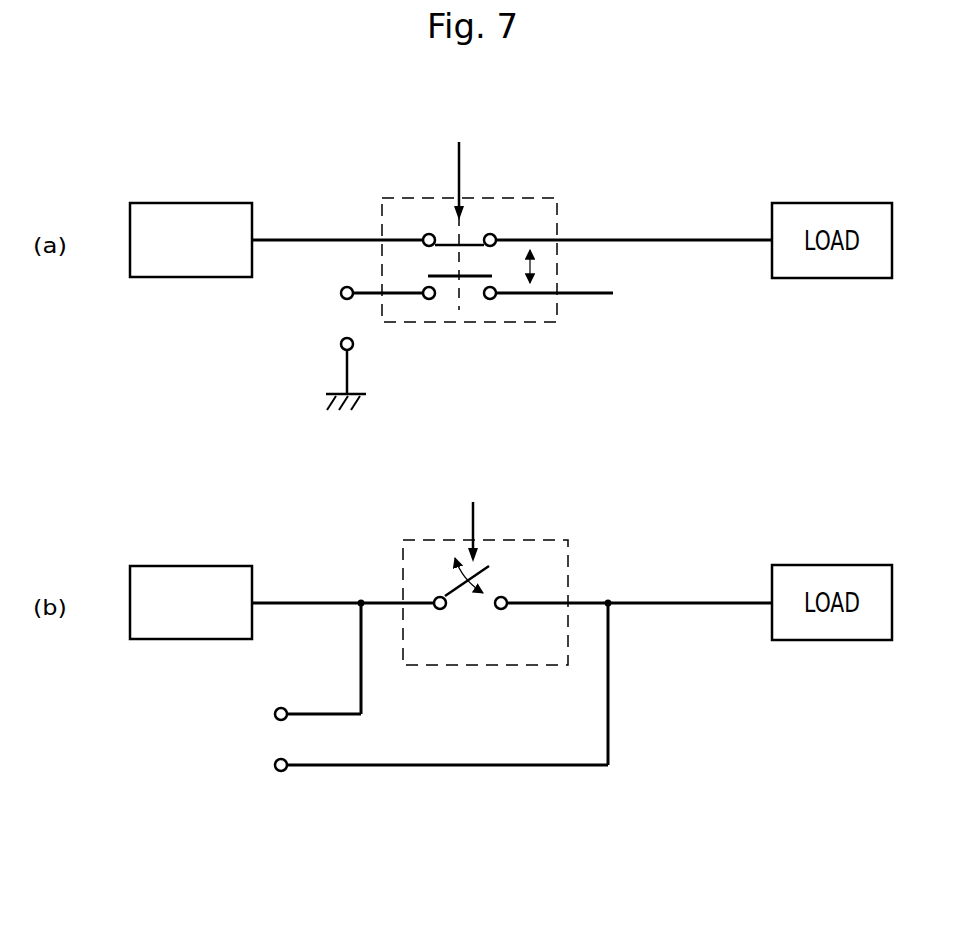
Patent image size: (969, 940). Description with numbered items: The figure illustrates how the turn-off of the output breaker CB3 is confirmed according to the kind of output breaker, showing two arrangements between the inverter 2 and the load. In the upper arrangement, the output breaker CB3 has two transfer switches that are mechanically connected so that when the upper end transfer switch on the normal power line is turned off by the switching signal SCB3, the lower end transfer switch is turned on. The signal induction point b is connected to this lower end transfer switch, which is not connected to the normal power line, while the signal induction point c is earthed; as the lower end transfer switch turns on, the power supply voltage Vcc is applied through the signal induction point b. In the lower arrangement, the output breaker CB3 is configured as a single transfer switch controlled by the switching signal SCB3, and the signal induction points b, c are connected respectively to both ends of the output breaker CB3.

The inverter 2 is at (191, 200).
The output breaker CB3 is at (548, 198).
The switching signal SCB3 is at (471, 337).
The power supply voltage Vcc is at (574, 293).
The signal induction point b is at (339, 504).
The signal induction point c is at (432, 555).